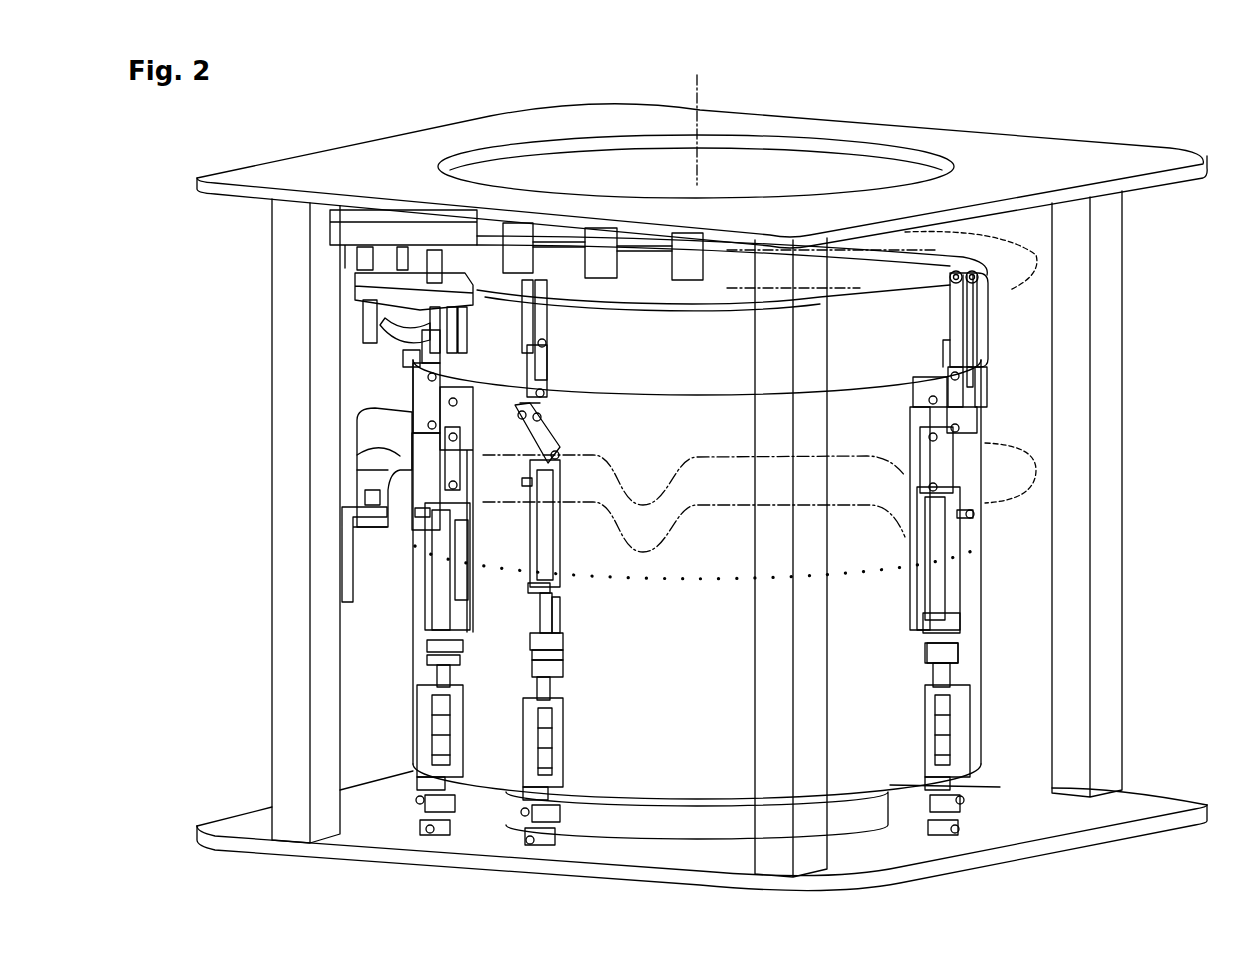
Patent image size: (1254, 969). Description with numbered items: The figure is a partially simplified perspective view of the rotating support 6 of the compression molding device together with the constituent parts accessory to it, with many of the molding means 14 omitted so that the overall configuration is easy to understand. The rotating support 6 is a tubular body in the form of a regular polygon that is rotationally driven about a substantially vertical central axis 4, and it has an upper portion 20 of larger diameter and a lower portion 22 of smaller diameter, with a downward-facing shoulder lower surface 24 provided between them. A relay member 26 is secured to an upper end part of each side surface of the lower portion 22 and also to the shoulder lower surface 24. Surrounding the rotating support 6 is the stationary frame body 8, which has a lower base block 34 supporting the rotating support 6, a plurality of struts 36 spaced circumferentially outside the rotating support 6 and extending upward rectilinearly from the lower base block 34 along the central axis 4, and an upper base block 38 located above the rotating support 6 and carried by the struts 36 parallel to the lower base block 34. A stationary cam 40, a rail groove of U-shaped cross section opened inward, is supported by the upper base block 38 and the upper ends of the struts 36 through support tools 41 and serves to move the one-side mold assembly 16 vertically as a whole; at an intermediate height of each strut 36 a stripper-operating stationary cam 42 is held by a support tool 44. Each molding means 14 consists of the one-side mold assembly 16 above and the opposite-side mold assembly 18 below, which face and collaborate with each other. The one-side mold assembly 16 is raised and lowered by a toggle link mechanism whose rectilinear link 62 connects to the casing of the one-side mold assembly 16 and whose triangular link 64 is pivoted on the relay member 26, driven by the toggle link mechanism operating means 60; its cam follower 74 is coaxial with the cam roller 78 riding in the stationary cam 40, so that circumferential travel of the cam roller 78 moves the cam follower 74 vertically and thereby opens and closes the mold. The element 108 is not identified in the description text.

The central axis 4 is at (700, 103).
The rotating support 6 is at (995, 398).
The stationary frame body 8 is at (205, 208).
The molding means 14 is at (567, 640).
The one-side mold assembly 16 is at (552, 606).
The opposite-side mold assembly 18 is at (566, 652).
The upper portion 20 is at (987, 343).
The lower portion 22 is at (967, 647).
The shoulder lower surface 24 is at (990, 370).
The relay member 26 is at (573, 420).
The lower base block 34 is at (233, 817).
The struts 36 is at (278, 546).
The upper base block 38 is at (228, 203).
The stationary cam 40 is at (645, 280).
The support tools 41 is at (600, 245).
The stripper-operating stationary cam 42 is at (370, 503).
The support tool 44 is at (363, 535).
The toggle link mechanism operating means 60 is at (495, 380).
The link 62 is at (520, 412).
The link 64 is at (525, 340).
The cam follower 74 is at (945, 292).
The cam roller 78 is at (977, 287).
The drive unit 108 is at (572, 750).